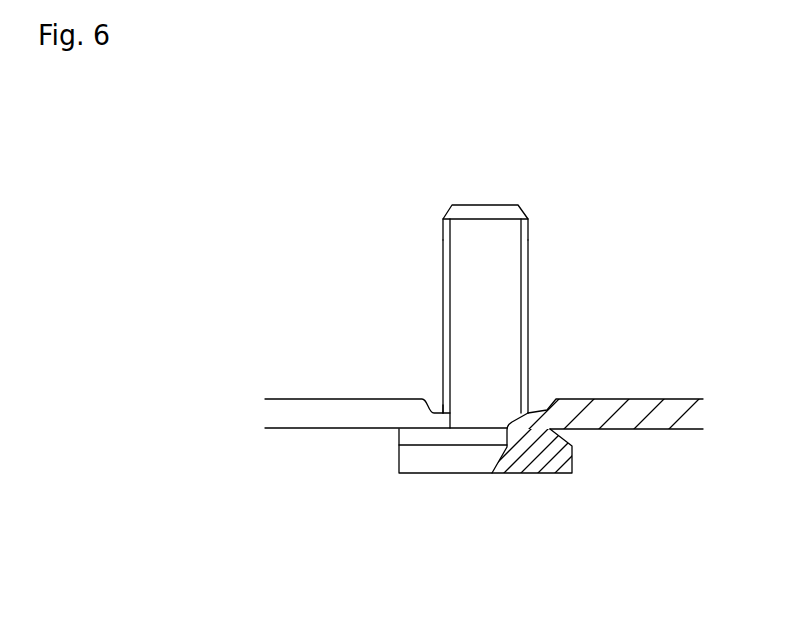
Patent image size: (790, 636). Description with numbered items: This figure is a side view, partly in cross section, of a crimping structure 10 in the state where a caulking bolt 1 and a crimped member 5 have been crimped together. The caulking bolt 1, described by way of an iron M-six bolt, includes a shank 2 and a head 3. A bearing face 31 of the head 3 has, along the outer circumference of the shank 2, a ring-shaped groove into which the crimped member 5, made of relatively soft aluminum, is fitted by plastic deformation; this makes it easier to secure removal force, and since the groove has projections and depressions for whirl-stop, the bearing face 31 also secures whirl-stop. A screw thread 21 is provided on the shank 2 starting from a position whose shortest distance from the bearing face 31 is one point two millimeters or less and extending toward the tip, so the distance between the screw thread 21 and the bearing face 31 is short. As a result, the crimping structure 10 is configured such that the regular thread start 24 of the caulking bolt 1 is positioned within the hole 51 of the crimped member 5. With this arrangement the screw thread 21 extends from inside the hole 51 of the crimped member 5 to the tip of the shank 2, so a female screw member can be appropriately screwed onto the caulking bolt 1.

The caulking bolt 1 is at (510, 343).
The shank 2 is at (441, 266).
The screw thread 21 is at (446, 233).
The regular thread start 24 is at (445, 412).
The head 3 is at (477, 487).
The bearing face 31 is at (422, 428).
The crimped member 5 is at (655, 413).
The hole 51 is at (446, 418).
The crimping structure 10 is at (352, 325).